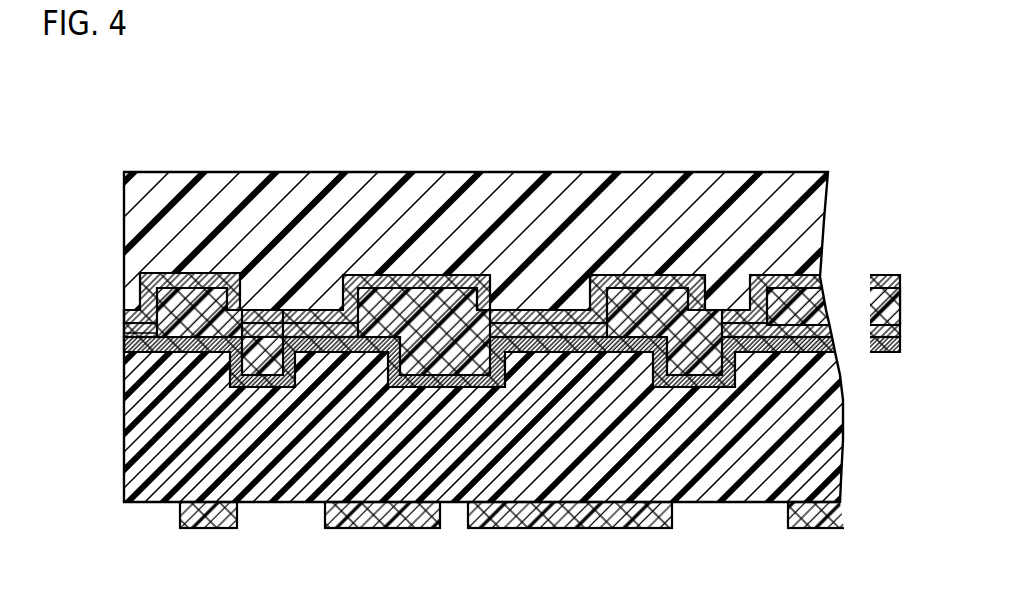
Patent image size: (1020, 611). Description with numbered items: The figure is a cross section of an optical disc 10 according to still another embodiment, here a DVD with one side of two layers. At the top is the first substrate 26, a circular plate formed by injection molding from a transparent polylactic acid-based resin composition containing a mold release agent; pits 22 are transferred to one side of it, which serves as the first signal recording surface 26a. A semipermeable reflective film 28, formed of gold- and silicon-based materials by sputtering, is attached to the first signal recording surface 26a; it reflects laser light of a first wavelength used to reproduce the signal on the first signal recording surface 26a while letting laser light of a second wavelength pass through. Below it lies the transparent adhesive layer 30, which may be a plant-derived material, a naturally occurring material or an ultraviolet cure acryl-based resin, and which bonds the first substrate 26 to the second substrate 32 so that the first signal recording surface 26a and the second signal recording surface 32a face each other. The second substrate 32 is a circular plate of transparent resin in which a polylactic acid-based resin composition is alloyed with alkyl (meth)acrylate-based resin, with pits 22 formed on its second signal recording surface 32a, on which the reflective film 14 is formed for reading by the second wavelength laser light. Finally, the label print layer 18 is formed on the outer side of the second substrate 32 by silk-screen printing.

The optical disc 10 is at (161, 86).
The reflective film 14 is at (832, 349).
The label print layer 18 is at (510, 517).
The pits 22 is at (440, 355).
The first substrate 26 is at (640, 197).
The first signal recording surface 26a is at (167, 274).
The semipermeable reflective film 28 is at (802, 284).
The adhesive layer 30 is at (803, 322).
The second substrate 32 is at (768, 420).
The second signal recording surface 32a is at (145, 333).